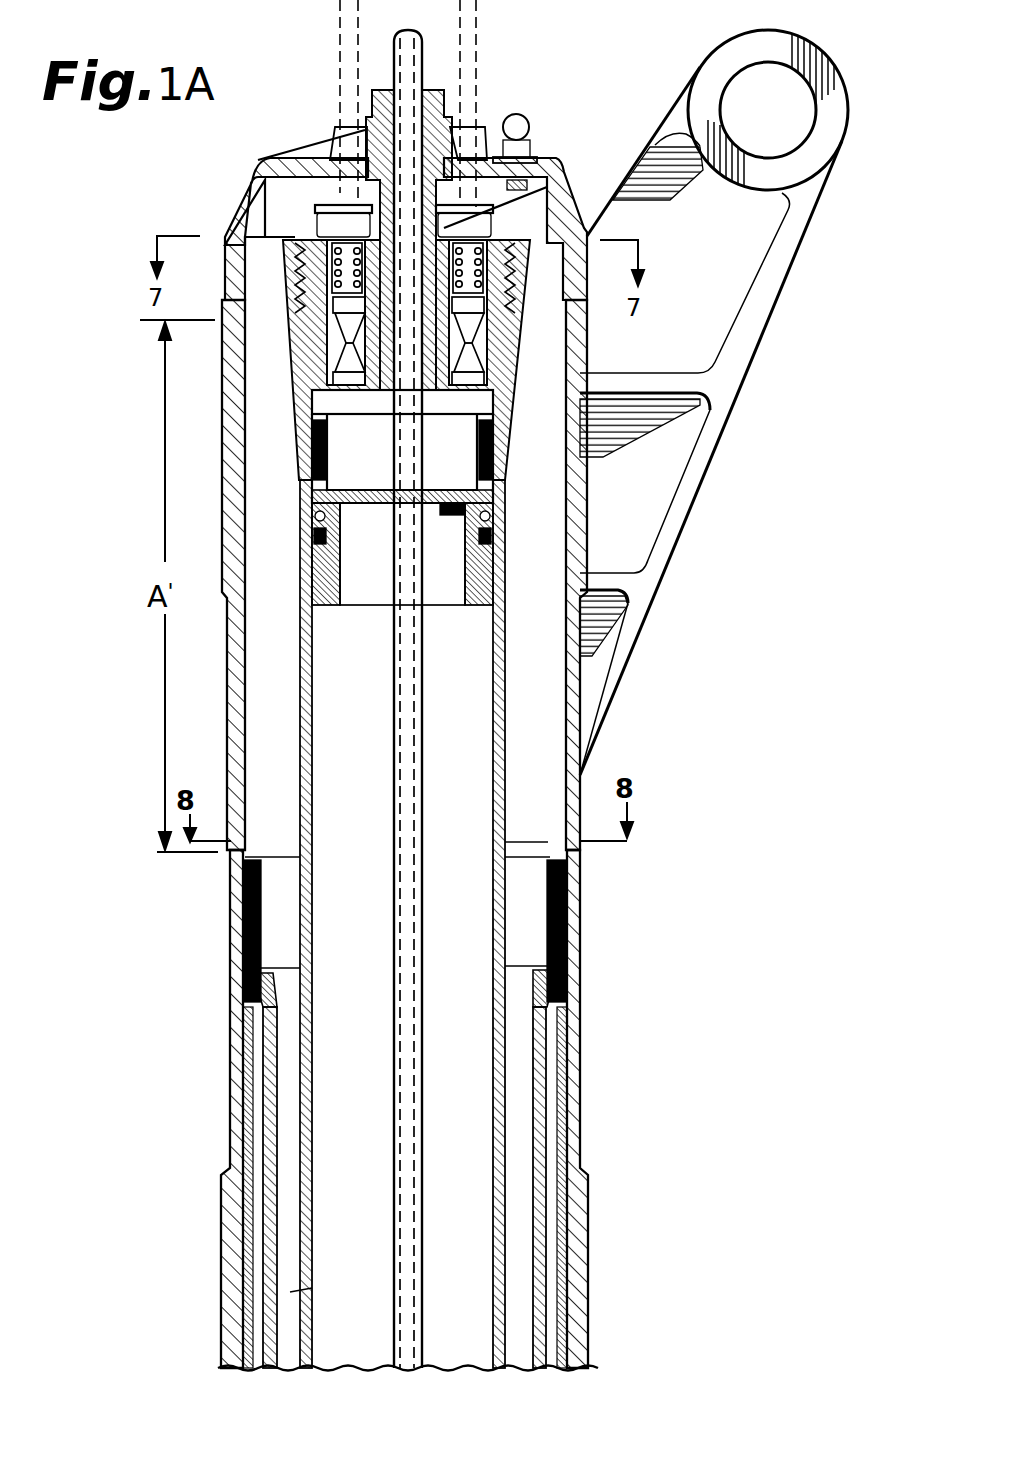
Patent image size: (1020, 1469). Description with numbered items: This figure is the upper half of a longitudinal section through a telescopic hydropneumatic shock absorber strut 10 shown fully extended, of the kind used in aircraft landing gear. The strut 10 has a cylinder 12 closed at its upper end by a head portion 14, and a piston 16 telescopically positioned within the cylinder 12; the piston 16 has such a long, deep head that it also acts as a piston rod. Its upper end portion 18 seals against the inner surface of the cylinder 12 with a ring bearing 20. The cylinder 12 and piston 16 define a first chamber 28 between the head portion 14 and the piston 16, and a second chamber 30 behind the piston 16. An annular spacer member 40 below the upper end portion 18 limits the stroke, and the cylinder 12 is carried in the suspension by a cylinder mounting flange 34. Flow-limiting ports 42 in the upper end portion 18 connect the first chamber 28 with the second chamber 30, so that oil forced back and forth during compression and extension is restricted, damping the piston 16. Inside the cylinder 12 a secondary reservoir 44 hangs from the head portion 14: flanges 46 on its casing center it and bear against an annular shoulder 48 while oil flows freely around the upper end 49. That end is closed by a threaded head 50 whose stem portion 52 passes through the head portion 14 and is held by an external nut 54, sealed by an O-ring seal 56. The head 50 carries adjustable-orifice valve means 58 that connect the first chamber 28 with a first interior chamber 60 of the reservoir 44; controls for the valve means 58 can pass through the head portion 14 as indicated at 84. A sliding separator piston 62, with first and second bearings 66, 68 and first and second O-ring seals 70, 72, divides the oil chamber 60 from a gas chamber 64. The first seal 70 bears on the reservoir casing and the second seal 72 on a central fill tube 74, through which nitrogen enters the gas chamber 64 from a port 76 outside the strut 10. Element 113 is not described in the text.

The telescopic hydropneumatic shock absorber strut 10 is at (692, 871).
The cylinder 12 is at (585, 1165).
The closed head portion 14 is at (250, 180).
The piston 16 is at (543, 1320).
The upper end portion 18 is at (578, 857).
The ring bearing 20 is at (570, 916).
The first chamber 28 is at (588, 728).
The second chamber 30 is at (257, 1060).
The cylinder mounting flange 34 is at (675, 448).
The annular spacer member 40 is at (543, 1069).
The flow-limiting valves or ports 42 is at (262, 1003).
The secondary bottle or reservoir 44 is at (299, 1214).
The flanges 46 is at (560, 226).
The annular shoulder 48 is at (278, 242).
The upper end 49 is at (297, 333).
The end plug or head 50 is at (478, 355).
The stem portion 52 is at (452, 127).
The external nut 54 is at (458, 112).
The O-ring seal 56 is at (350, 142).
The adjustable-orifice valve means 58 is at (316, 208).
The first interior chamber 60 is at (320, 403).
The sliding separator piston 62 is at (313, 496).
The second, gas chamber 64 is at (330, 905).
The first bearing 66 is at (313, 452).
The second bearing 68 is at (313, 548).
The first O-ring seal 70 is at (480, 530).
The second O-ring seal 72 is at (383, 530).
The central fill tube 74 is at (387, 1291).
The port 76 is at (420, 33).
The controls communication 84 is at (346, 62).
The control cable 113 is at (411, 684).